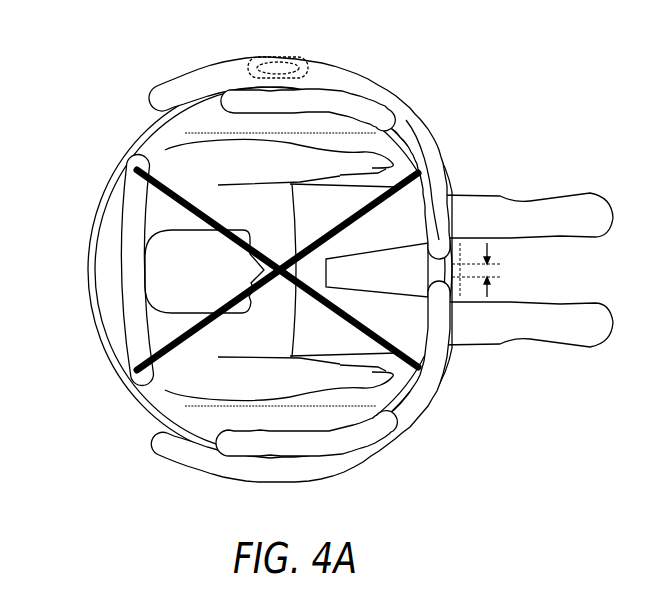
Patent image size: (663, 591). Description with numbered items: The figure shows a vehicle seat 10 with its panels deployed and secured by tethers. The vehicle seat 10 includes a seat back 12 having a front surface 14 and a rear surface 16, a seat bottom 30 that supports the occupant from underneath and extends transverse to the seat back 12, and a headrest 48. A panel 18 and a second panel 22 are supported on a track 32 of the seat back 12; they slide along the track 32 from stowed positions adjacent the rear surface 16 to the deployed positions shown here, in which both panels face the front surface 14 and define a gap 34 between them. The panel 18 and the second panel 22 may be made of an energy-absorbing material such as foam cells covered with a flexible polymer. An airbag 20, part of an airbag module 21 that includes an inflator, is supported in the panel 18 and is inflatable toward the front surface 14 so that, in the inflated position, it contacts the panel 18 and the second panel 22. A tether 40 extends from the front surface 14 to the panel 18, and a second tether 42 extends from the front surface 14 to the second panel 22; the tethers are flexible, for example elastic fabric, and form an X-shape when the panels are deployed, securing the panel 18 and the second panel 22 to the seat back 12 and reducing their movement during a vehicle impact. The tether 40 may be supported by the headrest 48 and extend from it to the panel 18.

The vehicle seat 10 is at (72, 63).
The seat back 12 is at (243, 98).
The front surface 14 is at (135, 275).
The rear surface 16 is at (103, 197).
The panel 18 is at (355, 95).
The airbag 20 is at (308, 58).
The airbag module 21 is at (272, 56).
The second panel 22 is at (353, 445).
The seat bottom 30 is at (450, 177).
The track 32 is at (120, 383).
The gap 34 is at (487, 293).
The tether 40 is at (170, 153).
The second tether 42 is at (168, 385).
The headrest 48 is at (110, 235).